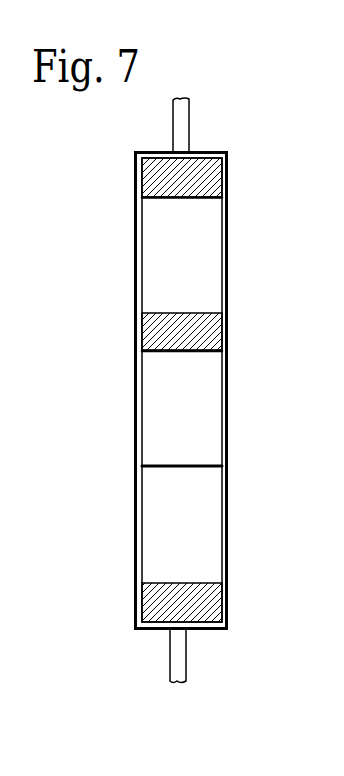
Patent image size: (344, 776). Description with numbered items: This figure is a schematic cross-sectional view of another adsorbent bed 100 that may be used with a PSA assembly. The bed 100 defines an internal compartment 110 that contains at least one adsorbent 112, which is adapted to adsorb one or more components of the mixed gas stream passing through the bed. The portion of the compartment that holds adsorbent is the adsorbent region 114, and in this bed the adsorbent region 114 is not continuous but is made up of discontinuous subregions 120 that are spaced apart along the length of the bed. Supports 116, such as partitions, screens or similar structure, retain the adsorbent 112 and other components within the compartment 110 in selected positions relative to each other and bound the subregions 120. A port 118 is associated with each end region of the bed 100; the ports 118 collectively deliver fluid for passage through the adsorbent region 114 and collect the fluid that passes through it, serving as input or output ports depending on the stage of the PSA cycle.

The adsorbent bed 100 is at (79, 191).
The internal compartment 110 is at (230, 291).
The adsorbent 112 is at (169, 299).
The adsorbent region 114 is at (212, 260).
The supports 116 is at (158, 187).
The port 118 is at (172, 136).
The discontinuous subregions 120 is at (162, 252).